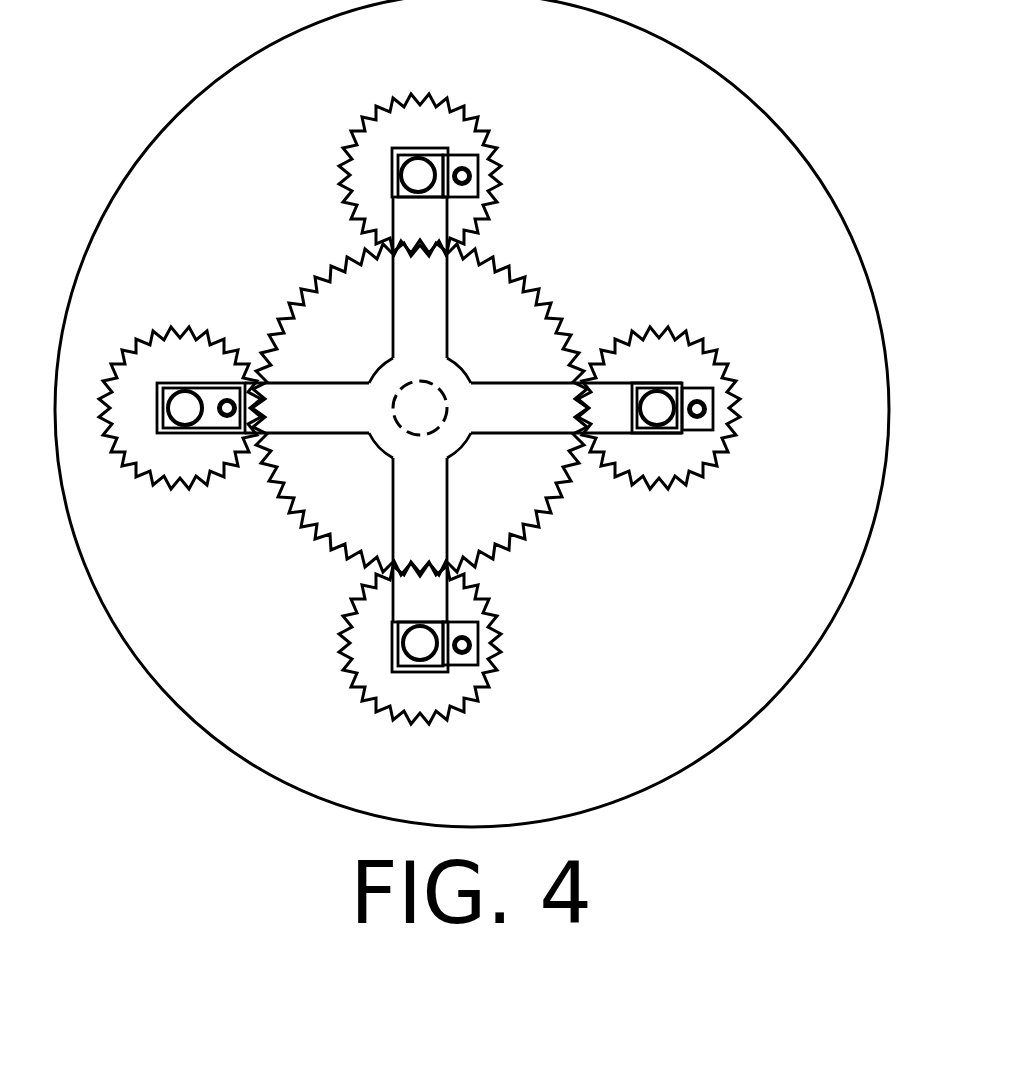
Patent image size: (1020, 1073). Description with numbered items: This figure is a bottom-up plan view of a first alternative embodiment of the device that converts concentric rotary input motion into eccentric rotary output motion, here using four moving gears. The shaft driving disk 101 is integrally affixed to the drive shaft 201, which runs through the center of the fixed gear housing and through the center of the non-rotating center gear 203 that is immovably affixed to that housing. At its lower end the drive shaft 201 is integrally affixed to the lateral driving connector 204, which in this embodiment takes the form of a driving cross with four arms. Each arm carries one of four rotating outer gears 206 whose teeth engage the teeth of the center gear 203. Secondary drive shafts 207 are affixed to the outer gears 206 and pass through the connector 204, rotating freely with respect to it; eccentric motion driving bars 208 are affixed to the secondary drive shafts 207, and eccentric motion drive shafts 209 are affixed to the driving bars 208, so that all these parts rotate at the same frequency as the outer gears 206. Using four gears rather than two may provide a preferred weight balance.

The shaft driving disk 101 is at (677, 132).
The drive shaft 201 is at (410, 403).
The non-rotating center gear 203 is at (528, 355).
The lateral driving connector 204 is at (535, 432).
The rotating outer gears 206 is at (408, 127).
The secondary drive shafts 207 is at (418, 175).
The eccentric motion driving bars 208 is at (447, 157).
The eccentric motion drive shafts 209 is at (477, 175).